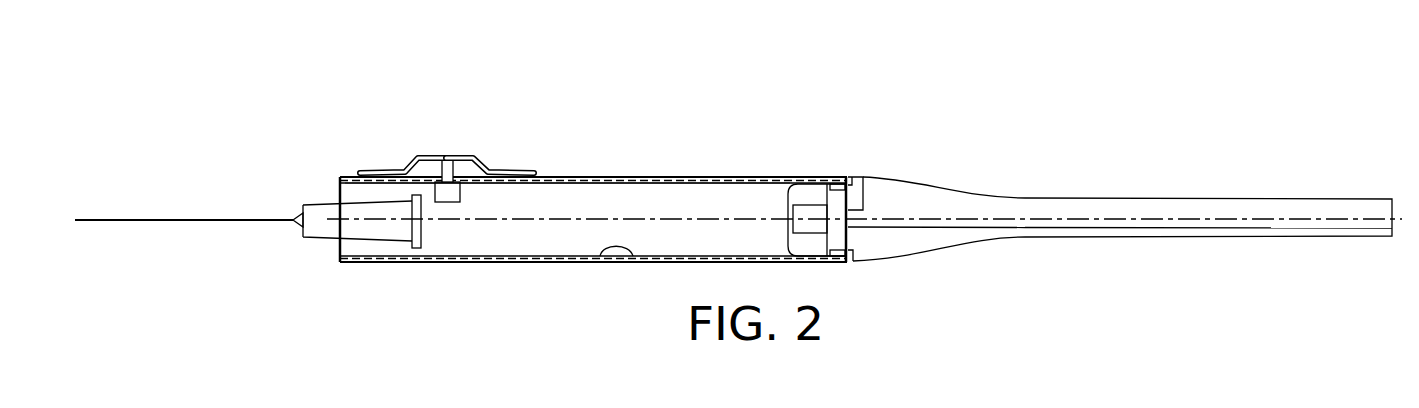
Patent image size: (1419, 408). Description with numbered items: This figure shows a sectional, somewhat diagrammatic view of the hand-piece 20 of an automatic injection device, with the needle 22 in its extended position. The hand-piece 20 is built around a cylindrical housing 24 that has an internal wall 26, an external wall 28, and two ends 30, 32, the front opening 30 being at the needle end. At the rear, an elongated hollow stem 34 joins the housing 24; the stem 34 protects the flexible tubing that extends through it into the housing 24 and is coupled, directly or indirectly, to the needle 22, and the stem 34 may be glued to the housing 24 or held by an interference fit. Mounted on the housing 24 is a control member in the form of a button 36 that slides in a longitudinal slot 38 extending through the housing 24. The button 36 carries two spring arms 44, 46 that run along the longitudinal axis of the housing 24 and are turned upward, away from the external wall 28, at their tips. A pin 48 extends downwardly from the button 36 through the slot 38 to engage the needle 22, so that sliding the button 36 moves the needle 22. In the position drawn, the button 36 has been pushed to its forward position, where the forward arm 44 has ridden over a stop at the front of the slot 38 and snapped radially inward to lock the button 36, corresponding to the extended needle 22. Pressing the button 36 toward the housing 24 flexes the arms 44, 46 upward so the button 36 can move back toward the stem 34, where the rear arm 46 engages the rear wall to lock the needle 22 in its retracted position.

The hand-piece 20 is at (508, 30).
The needle 22 is at (181, 219).
The cylindrical housing 24 is at (613, 177).
The internal wall 26 is at (602, 257).
The external wall 28 is at (753, 177).
The front opening 30 is at (343, 245).
The end 32 is at (858, 176).
The elongated hollow stem 34 is at (966, 195).
The button 36 is at (437, 157).
The longitudinal slot 38 is at (667, 187).
The spring arm 44 is at (366, 168).
The spring arm 46 is at (537, 168).
The pin 48 is at (1357, 237).